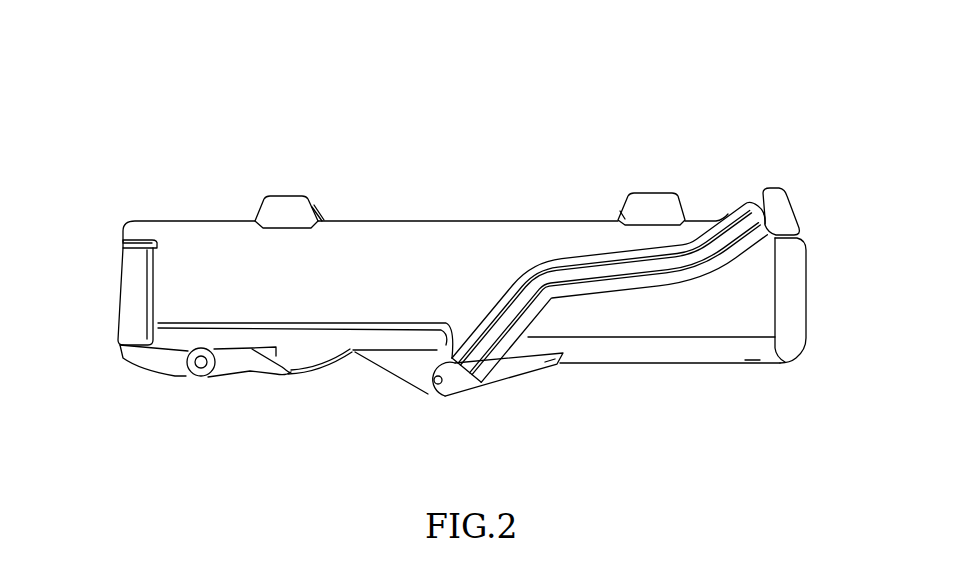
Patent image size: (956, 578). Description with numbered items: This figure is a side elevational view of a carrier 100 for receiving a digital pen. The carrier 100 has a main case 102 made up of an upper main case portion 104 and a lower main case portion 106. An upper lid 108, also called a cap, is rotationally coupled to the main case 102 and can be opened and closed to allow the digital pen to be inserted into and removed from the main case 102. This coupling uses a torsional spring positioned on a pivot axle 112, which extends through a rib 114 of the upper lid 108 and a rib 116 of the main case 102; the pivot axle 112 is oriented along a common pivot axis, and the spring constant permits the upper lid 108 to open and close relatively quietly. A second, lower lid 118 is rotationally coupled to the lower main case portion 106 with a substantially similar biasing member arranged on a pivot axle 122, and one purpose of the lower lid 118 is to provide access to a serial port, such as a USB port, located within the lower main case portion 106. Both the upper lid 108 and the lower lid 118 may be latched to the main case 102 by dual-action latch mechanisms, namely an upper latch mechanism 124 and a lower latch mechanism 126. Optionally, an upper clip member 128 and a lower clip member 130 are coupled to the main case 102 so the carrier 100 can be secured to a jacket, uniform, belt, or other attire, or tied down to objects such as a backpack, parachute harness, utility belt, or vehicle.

The carrier 100 is at (207, 105).
The main case 102 is at (385, 213).
The upper main case portion 104 is at (508, 220).
The lower main case portion 106 is at (207, 220).
The upper lid 108 is at (712, 320).
The pivot axle 112 is at (428, 386).
The rib of upper lid 114 is at (498, 375).
The rib of main case 116 is at (380, 366).
The lower lid 118 is at (117, 290).
The pivot axle 122 is at (204, 364).
The upper latch mechanism 124 is at (772, 188).
The lower latch mechanism 126 is at (150, 368).
The upper clip member 128 is at (654, 193).
The lower clip member 130 is at (288, 196).